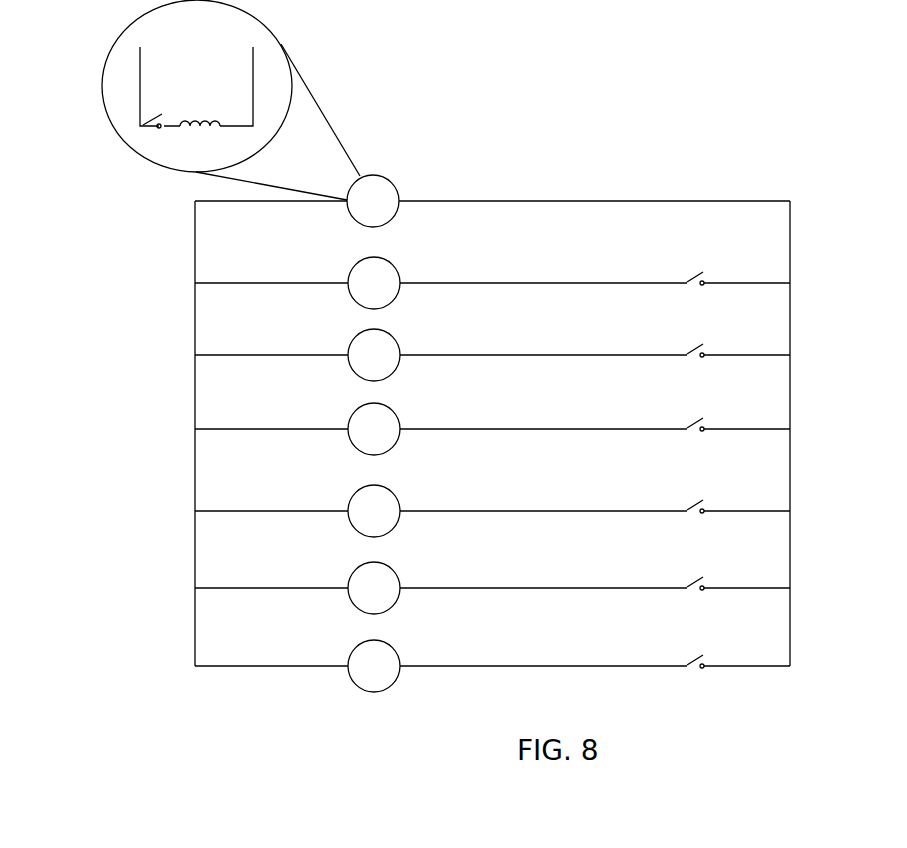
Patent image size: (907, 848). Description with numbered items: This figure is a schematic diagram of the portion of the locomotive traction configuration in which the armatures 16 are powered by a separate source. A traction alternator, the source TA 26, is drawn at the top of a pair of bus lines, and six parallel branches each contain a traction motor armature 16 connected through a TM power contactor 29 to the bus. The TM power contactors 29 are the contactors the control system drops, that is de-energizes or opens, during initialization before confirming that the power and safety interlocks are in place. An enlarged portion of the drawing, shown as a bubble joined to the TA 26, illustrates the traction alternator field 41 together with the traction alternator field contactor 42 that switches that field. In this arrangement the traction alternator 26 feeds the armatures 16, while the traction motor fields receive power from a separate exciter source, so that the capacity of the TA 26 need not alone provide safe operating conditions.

The armature 16 is at (419, 701).
The traction alternator (TA) 26 is at (392, 183).
The TM power contactor 29 is at (838, 603).
The traction alternator field 41 is at (198, 122).
The traction alternator field contactor 42 is at (149, 115).